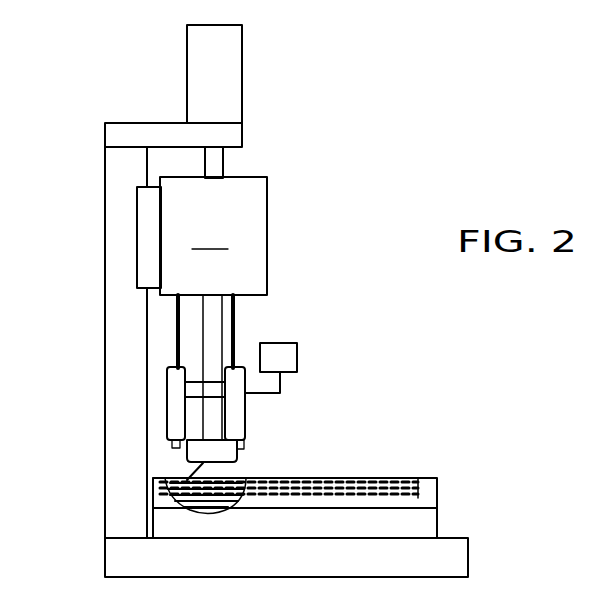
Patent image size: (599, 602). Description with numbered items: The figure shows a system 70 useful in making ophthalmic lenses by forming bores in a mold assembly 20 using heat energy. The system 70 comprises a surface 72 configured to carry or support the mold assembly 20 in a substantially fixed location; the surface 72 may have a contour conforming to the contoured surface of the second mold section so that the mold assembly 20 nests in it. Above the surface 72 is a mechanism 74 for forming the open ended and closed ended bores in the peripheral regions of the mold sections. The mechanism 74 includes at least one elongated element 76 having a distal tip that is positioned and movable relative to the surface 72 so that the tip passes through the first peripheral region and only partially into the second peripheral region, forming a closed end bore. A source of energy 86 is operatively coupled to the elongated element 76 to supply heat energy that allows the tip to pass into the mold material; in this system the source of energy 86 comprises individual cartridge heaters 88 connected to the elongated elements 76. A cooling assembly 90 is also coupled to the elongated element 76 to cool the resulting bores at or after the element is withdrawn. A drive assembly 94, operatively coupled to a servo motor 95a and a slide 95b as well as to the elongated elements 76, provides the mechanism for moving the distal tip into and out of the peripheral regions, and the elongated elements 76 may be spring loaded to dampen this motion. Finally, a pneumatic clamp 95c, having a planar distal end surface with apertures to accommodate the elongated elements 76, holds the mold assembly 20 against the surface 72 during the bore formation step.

The mold assembly 20 is at (273, 477).
The system 70 is at (277, 98).
The surface 72 is at (318, 477).
The mechanism 74 is at (155, 402).
The elongated element 76 is at (180, 446).
The source of energy 86 is at (167, 357).
The cartridge heaters 88 is at (168, 421).
The cooling assembly 90 is at (283, 350).
The drive assembly 94 is at (213, 236).
The servo motor 95a is at (213, 82).
The slide 95b is at (137, 211).
The pneumatic clamp 95c is at (187, 480).